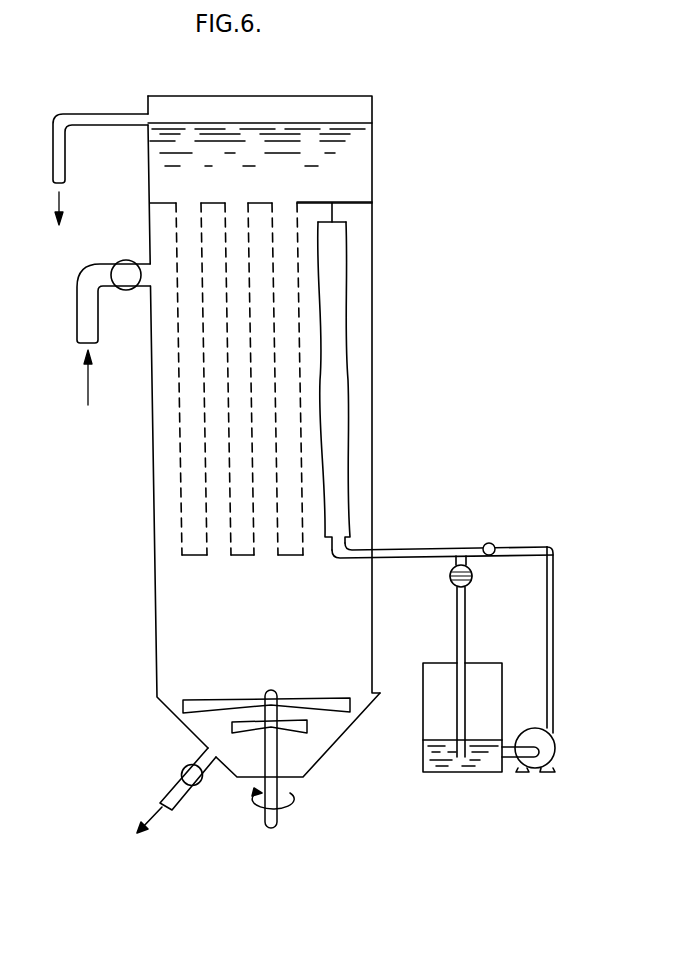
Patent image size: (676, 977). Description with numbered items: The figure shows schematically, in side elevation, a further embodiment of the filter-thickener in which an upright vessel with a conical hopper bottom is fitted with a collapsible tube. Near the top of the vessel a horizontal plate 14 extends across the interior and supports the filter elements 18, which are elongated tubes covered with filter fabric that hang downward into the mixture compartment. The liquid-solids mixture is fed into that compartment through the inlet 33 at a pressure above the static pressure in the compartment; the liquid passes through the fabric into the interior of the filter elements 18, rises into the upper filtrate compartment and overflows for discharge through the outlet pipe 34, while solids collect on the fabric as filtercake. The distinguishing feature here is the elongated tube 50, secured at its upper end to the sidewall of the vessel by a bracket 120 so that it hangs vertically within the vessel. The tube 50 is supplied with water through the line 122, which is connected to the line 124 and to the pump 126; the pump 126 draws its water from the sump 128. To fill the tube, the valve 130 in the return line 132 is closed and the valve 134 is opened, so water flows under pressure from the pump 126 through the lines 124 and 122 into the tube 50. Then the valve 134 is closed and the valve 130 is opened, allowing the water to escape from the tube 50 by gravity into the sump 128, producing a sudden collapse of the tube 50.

The horizontal plate 14 is at (320, 201).
The filter elements 18 is at (180, 437).
The inlet 33 is at (77, 328).
The outlet pipe 34 is at (102, 125).
The elongated tube 50 is at (350, 452).
The bracket 120 is at (335, 212).
The line 122 is at (398, 548).
The line 124 is at (515, 547).
The pump 126 is at (553, 757).
The sump 128 is at (423, 741).
The valve 130 is at (463, 547).
The return line 132 is at (457, 630).
The valve 134 is at (488, 556).